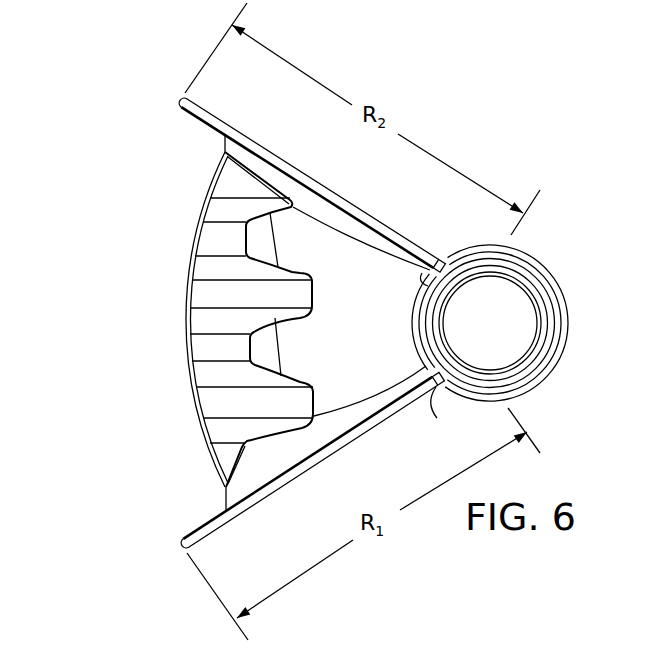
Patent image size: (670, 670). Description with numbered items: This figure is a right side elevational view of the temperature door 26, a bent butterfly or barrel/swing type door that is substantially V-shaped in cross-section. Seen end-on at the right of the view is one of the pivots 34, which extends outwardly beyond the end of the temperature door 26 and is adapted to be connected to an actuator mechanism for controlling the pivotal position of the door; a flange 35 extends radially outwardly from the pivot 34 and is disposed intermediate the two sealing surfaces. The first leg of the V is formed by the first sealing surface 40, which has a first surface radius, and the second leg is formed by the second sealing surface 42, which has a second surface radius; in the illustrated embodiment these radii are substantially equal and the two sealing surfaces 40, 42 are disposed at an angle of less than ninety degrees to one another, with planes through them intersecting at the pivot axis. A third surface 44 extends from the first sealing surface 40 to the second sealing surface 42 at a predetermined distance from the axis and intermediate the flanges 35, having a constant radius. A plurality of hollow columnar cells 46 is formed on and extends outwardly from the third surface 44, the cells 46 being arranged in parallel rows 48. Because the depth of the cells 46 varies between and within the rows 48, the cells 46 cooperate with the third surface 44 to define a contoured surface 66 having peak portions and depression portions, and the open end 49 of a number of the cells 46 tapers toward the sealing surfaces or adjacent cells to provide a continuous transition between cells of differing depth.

The temperature door 26 is at (86, 120).
The pivot 34 is at (510, 320).
The flange 35 is at (390, 360).
The first sealing surface 40 is at (435, 402).
The second sealing surface 42 is at (427, 254).
The third surface 44 is at (210, 465).
The hollow columnar cells 46 is at (208, 292).
The rows 48 is at (212, 243).
The open end 49 is at (210, 182).
The contoured surface 66 is at (196, 209).